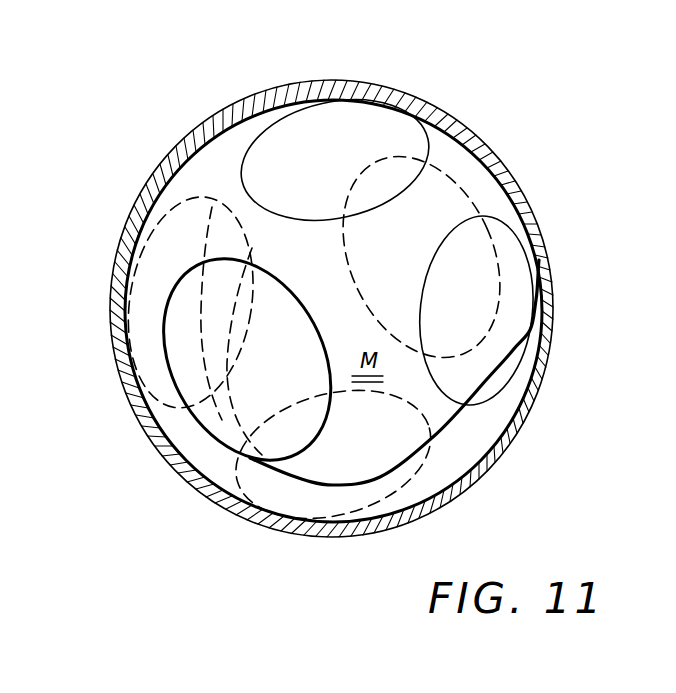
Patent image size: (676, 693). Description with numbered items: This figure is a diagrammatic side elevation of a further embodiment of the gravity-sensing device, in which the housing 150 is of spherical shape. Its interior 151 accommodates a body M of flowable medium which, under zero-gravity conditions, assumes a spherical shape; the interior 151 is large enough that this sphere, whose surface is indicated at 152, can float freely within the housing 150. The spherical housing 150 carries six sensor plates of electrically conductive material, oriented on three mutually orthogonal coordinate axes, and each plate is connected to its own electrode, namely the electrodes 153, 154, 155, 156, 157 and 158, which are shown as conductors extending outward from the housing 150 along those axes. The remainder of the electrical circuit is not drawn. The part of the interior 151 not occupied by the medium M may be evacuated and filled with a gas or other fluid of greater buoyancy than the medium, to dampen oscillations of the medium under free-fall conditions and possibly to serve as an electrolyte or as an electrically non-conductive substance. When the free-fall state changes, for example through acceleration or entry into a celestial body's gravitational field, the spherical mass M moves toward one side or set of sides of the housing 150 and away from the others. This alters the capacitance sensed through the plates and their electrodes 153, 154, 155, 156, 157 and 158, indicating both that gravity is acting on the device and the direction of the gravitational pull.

The housing 150 is at (478, 144).
The interior 151 is at (533, 404).
The surface of the sphere M 152 is at (443, 433).
The electrode 153 is at (450, 248).
The electrode 154 is at (498, 313).
The electrode 155 is at (333, 470).
The electrode 156 is at (224, 371).
The electrode 157 is at (166, 311).
The electrode 158 is at (333, 138).